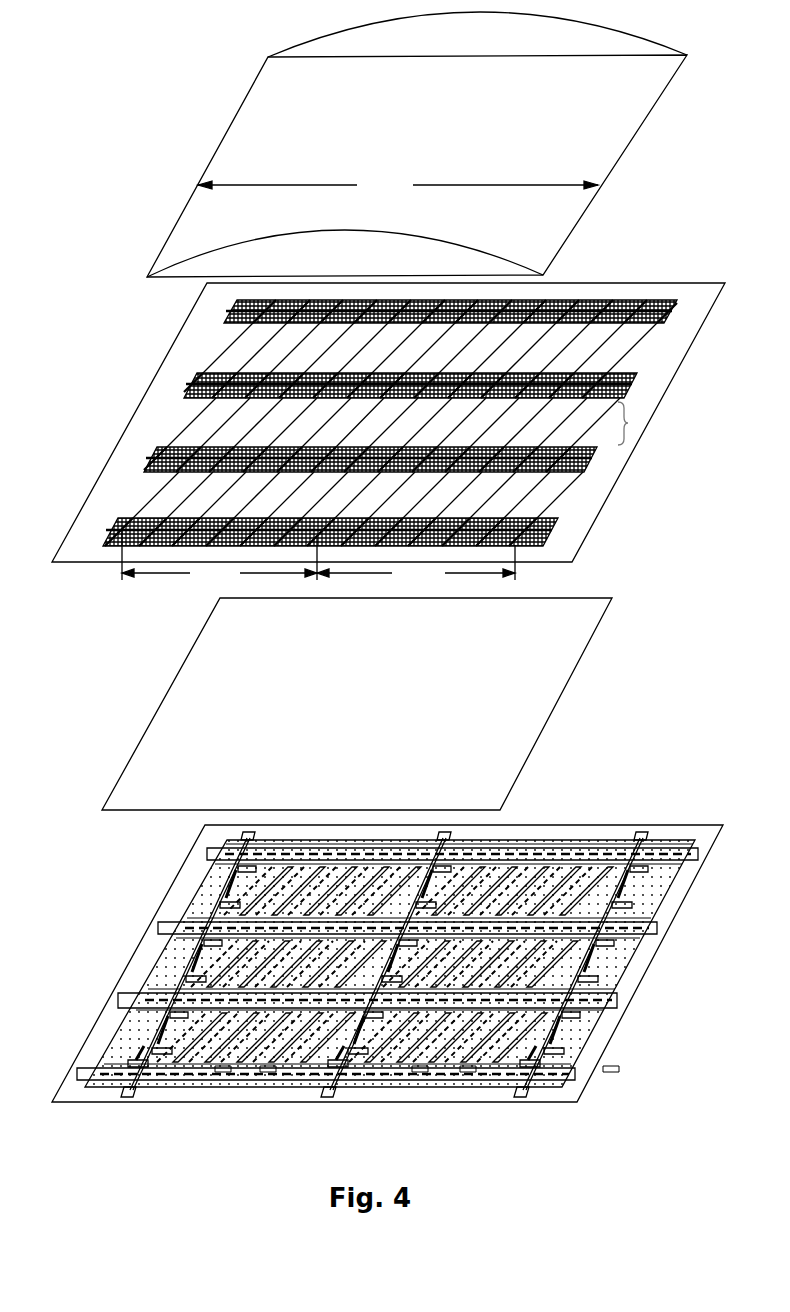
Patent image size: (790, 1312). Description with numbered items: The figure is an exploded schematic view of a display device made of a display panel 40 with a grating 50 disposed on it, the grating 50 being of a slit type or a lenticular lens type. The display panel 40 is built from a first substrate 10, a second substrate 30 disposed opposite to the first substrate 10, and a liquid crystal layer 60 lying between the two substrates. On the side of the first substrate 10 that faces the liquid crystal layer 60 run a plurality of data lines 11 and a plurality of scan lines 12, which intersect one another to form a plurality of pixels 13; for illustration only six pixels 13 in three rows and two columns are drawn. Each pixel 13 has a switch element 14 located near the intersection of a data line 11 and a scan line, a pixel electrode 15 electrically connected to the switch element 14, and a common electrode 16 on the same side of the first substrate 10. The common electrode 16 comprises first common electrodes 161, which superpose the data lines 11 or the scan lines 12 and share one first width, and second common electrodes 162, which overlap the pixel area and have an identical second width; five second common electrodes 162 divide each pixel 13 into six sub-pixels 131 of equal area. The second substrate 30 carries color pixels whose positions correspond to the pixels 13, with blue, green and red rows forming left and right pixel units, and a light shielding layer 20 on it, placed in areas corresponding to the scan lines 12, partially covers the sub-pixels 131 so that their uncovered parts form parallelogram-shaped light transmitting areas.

The first substrate 10 is at (575, 830).
The data line 11 is at (135, 1092).
The scan line 12 is at (87, 1077).
The pixel 13 is at (293, 1075).
The sub-pixel 131 is at (223, 1070).
The switch element 14 is at (130, 1067).
The pixel electrode 15 is at (180, 1070).
The common electrode 16 is at (372, 960).
The first common electrode 161 is at (250, 880).
The second common electrode 162 is at (230, 908).
The light shielding layer 20 is at (633, 382).
The second substrate 30 is at (585, 513).
The display panel 40 is at (678, 537).
The grating 50 is at (595, 170).
The liquid crystal layer 60 is at (538, 712).